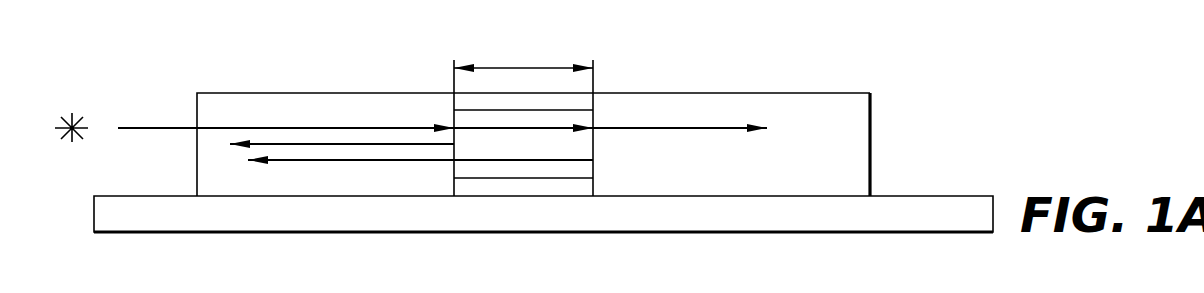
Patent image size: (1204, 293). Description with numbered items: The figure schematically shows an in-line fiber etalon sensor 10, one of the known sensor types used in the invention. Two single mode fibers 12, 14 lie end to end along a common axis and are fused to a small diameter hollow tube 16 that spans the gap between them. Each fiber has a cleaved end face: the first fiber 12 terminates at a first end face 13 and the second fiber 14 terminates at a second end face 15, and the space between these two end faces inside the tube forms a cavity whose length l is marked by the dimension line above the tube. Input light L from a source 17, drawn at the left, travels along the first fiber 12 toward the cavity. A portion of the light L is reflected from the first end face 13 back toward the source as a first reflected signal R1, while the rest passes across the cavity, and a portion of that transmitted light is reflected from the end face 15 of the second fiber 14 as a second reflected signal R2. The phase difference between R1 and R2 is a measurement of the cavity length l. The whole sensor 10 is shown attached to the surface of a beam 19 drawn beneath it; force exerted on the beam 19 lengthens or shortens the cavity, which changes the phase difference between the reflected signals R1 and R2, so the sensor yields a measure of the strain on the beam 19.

The in-line fiber etalon sensor 10 is at (883, 82).
The first single mode fiber 12 is at (358, 92).
The first cleaved end face 13 is at (462, 170).
The second single mode fiber 14 is at (717, 92).
The second cleaved end face 15 is at (588, 145).
The hollow tube 16 is at (490, 187).
The source 17 is at (72, 117).
The beam 19 is at (957, 205).
The input light L is at (130, 127).
The first reflected light R1 is at (237, 148).
The second reflected light R2 is at (307, 163).
The cavity length l is at (523, 56).